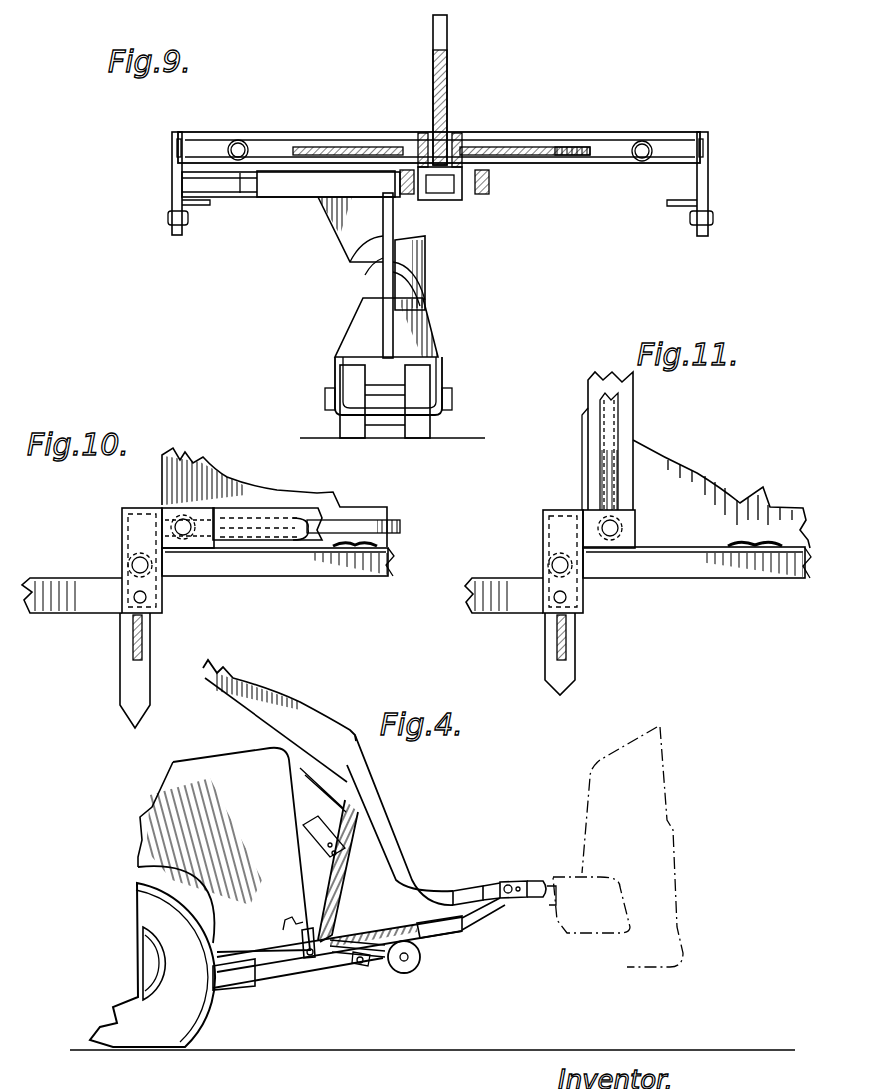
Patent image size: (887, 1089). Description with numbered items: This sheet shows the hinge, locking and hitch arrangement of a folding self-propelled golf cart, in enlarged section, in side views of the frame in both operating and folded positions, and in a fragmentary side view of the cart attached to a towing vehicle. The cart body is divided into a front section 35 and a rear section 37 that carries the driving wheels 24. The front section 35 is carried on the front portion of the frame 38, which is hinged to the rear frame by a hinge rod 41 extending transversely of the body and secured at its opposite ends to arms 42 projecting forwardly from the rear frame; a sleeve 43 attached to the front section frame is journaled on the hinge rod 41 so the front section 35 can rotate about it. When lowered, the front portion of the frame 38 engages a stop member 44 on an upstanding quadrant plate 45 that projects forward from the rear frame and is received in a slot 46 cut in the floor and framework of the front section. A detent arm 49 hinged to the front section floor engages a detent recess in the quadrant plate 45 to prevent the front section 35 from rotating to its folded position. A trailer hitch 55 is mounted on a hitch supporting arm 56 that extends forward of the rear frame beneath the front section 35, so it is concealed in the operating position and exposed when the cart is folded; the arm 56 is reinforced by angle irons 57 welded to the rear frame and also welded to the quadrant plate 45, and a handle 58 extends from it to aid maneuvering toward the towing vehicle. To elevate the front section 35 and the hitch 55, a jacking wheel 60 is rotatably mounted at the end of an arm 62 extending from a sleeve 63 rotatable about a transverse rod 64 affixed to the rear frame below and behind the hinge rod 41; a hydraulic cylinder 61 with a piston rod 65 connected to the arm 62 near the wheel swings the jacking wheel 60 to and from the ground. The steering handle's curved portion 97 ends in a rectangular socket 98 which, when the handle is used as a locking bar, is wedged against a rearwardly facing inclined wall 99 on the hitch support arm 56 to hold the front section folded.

In FIG. 4, the driving wheels 24 is at (167, 1025).
In FIG. 4, the front section 35 is at (305, 730).
In FIG. 4, the rear section 37 is at (172, 806).
In FIG. 9, the front portion of the frame 38 is at (637, 146).
In FIG. 10, the front portion of the frame 38 is at (292, 520).
In FIG. 11, the front portion of the frame 38 is at (612, 470).
In FIG. 9, the hinge rod 41 is at (173, 146).
In FIG. 10, the hinge rod 41 is at (170, 526).
In FIG. 11, the hinge rod 41 is at (588, 528).
In FIG. 9, the arms 42 is at (180, 132).
In FIG. 10, the arms 42 is at (166, 512).
In FIG. 11, the arms 42 is at (592, 520).
In FIG. 4, the arms 42 is at (330, 953).
In FIG. 9, the sleeve 43 is at (258, 146).
In FIG. 10, the sleeve 43 is at (187, 518).
In FIG. 11, the sleeve 43 is at (620, 526).
In FIG. 10, the stop member 44 is at (372, 506).
In FIG. 11, the stop member 44 is at (780, 506).
In FIG. 4, the stop member 44 is at (362, 922).
In FIG. 9, the quadrant plate 45 is at (448, 60).
In FIG. 10, the quadrant plate 45 is at (260, 497).
In FIG. 11, the quadrant plate 45 is at (706, 480).
In FIG. 4, the quadrant plate 45 is at (313, 907).
In FIG. 9, the slot 46 is at (450, 135).
In FIG. 4, the detent arm 49 is at (322, 825).
In FIG. 4, the trailer hitch 55 is at (540, 880).
In FIG. 9, the hitch supporting arm 56 is at (458, 198).
In FIG. 4, the hitch supporting arm 56 is at (453, 920).
In FIG. 9, the angle irons 57 is at (410, 196).
In FIG. 10, the angle irons 57 is at (364, 568).
In FIG. 11, the angle irons 57 is at (760, 565).
In FIG. 4, the angle irons 57 is at (427, 932).
In FIG. 4, the handle 58 is at (512, 881).
In FIG. 9, the jacking wheel 60 is at (430, 422).
In FIG. 4, the jacking wheel 60 is at (400, 974).
In FIG. 9, the hydraulic cylinder 61 is at (427, 272).
In FIG. 4, the hydraulic cylinder 61 is at (240, 983).
In FIG. 9, the arm 62 is at (350, 262).
In FIG. 10, the arm 62 is at (148, 670).
In FIG. 11, the arm 62 is at (565, 672).
In FIG. 4, the arm 62 is at (380, 972).
In FIG. 9, the sleeve 63 is at (300, 186).
In FIG. 10, the sleeve 63 is at (130, 556).
In FIG. 11, the sleeve 63 is at (548, 560).
In FIG. 9, the rod 64 is at (240, 195).
In FIG. 10, the rod 64 is at (130, 567).
In FIG. 11, the rod 64 is at (548, 567).
In FIG. 4, the piston rod 65 is at (310, 968).
In FIG. 4, the curved portion 97 is at (430, 895).
In FIG. 4, the socket 98 is at (462, 888).
In FIG. 4, the inclined wall 99 is at (482, 886).